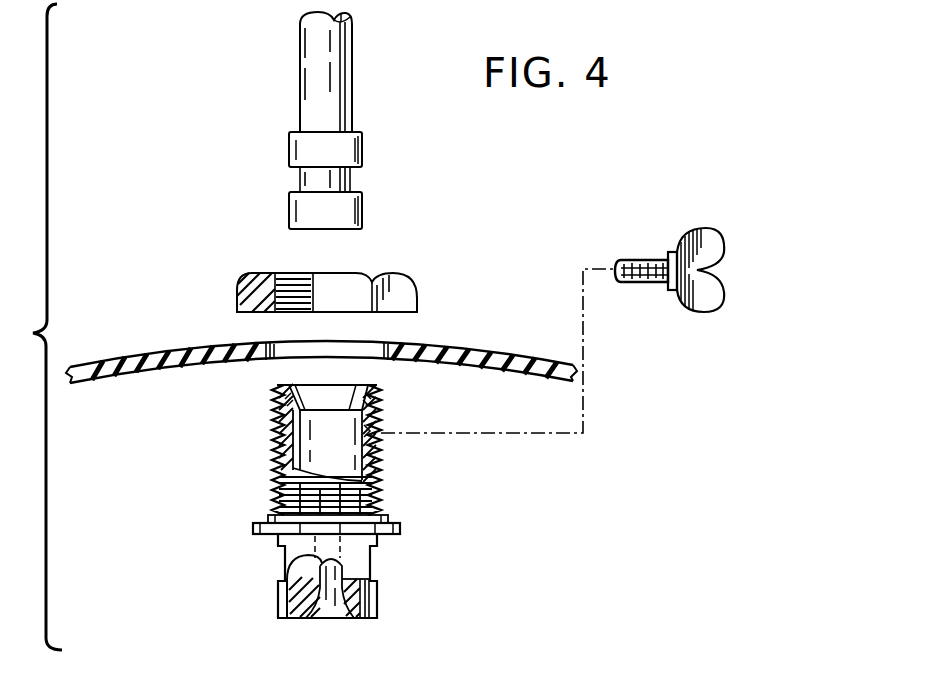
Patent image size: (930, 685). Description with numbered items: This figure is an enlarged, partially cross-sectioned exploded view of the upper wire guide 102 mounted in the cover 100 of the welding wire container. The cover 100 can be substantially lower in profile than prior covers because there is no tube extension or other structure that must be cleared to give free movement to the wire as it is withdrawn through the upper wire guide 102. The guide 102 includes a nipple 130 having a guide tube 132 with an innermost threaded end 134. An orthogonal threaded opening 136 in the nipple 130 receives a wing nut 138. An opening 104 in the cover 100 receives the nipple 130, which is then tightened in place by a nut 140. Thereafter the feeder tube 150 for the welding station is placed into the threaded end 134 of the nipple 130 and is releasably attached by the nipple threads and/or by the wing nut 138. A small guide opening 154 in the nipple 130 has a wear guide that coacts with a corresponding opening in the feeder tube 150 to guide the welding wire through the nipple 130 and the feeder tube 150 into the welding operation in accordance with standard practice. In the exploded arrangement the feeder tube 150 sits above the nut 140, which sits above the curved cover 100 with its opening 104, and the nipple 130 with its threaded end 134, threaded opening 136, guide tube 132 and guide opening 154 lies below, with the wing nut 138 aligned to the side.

The cover 100 is at (321, 327).
The upper wire guide 102 is at (316, 598).
The opening 104 is at (378, 346).
The nipple 130 is at (326, 459).
The guide tube 132 is at (374, 597).
The innermost threaded end 134 is at (276, 408).
The orthogonal threaded opening 136 is at (365, 433).
The wing nut 138 is at (690, 243).
The nut 140 is at (405, 283).
The feeder tube 150 is at (312, 61).
The small guide opening 154 is at (322, 600).